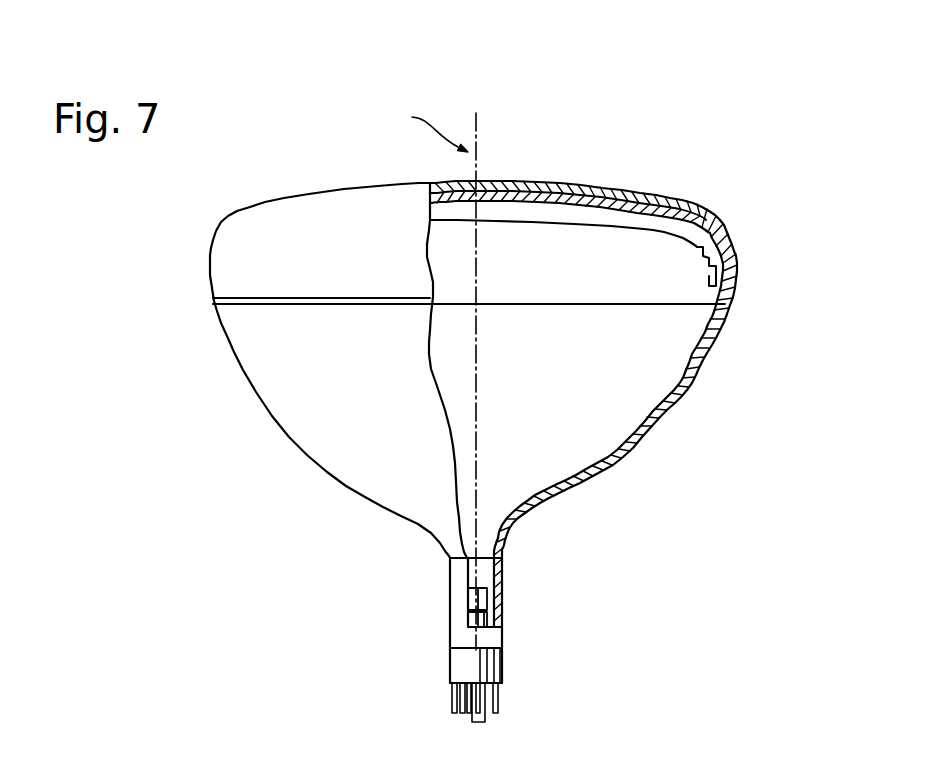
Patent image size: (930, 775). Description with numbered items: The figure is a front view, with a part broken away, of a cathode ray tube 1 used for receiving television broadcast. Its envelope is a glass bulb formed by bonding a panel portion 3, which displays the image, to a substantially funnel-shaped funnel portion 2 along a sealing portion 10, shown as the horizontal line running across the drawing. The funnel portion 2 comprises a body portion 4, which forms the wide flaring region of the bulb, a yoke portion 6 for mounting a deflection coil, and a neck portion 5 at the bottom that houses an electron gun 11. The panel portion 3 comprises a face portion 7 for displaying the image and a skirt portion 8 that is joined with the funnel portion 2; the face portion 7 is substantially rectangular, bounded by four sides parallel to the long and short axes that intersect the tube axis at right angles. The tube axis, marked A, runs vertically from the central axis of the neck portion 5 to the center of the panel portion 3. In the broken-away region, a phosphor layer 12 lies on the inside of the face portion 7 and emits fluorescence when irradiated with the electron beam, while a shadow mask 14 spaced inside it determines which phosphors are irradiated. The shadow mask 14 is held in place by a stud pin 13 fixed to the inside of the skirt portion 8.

The cathode ray tube 1 is at (521, 181).
The funnel portion 2 is at (532, 426).
The panel portion 3 is at (643, 281).
The body portion 4 is at (317, 417).
The neck portion 5 is at (439, 577).
The yoke portion 6 is at (547, 510).
The face portion 7 is at (665, 200).
The skirt portion 8 is at (735, 248).
The sealing portion 10 is at (210, 303).
The electron gun 11 is at (482, 600).
The phosphor layer 12 is at (582, 205).
The stud pin 13 is at (713, 278).
The shadow mask 14 is at (523, 223).